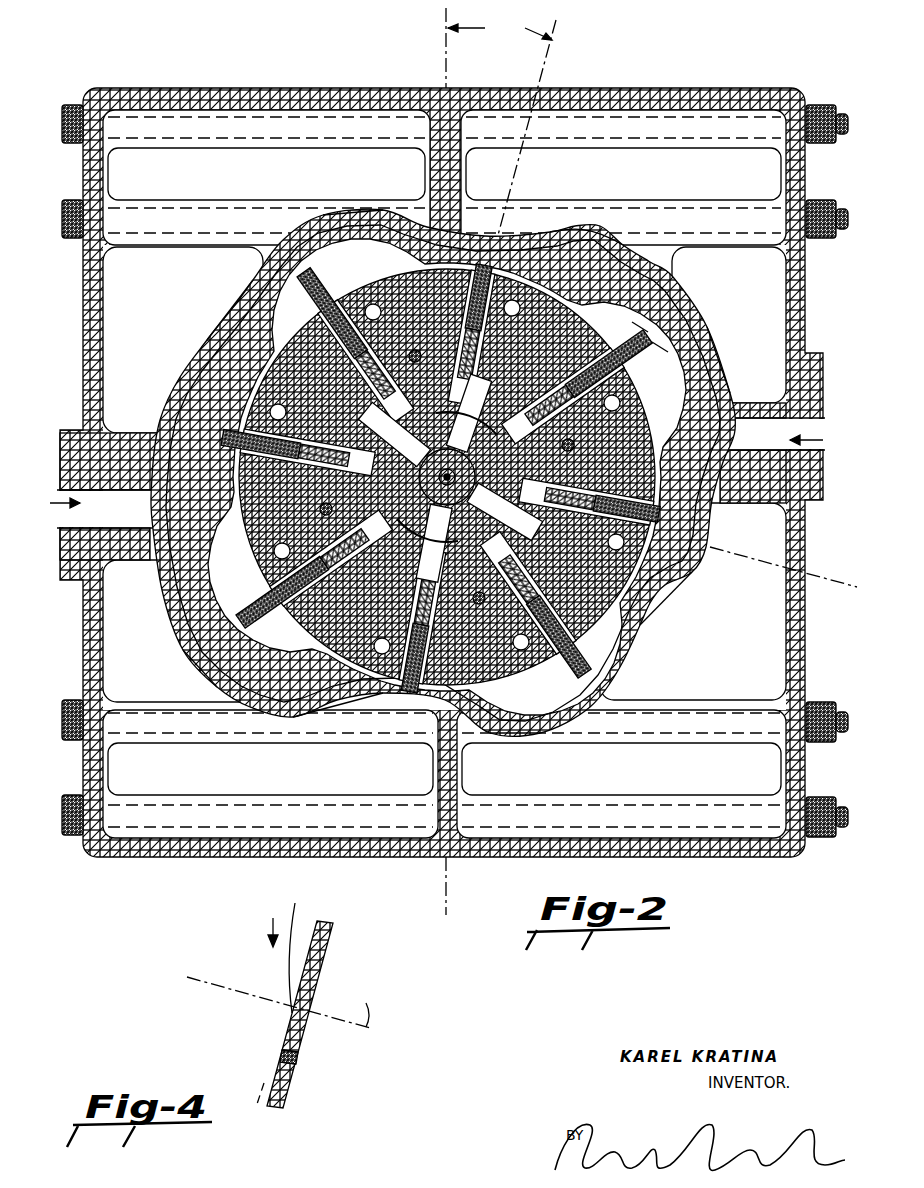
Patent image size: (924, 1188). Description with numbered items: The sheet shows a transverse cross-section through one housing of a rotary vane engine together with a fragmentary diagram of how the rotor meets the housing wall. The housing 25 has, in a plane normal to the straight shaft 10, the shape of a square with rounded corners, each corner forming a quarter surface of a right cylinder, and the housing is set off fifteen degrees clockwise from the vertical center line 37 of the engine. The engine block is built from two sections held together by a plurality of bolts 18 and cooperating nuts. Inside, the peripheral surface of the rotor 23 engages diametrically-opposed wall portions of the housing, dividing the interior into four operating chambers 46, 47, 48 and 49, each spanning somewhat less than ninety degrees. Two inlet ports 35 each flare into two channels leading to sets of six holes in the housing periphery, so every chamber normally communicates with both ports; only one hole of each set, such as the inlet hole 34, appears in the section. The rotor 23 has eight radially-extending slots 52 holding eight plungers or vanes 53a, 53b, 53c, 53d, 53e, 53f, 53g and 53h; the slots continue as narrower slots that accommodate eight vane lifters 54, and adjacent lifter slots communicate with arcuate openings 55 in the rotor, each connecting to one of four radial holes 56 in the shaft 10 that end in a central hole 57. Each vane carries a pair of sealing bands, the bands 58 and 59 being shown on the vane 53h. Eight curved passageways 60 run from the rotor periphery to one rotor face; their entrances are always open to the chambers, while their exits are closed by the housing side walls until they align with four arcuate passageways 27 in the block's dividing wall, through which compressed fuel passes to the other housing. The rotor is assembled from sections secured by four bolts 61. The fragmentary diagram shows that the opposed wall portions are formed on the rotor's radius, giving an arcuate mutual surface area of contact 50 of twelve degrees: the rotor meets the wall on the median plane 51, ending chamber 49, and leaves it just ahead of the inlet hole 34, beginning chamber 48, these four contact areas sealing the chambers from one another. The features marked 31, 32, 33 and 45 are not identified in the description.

In FIG. 2, the straight shaft 10 is at (440, 459).
In FIG. 2, the bolts 18 is at (233, 804).
In FIG. 2, the rotor 23 is at (283, 323).
In FIG. 4, the rotor 23 is at (228, 970).
In FIG. 2, the housing 25 is at (622, 647).
In FIG. 4, the housing 25 is at (323, 961).
In FIG. 2, the arcuate passageways 27 is at (456, 650).
In FIG. 2, the stator shoulder 31 is at (560, 282).
In FIG. 2, the stator shoulder 32 is at (247, 357).
In FIG. 2, the stator shoulder 33 is at (328, 690).
In FIG. 2, the inlet hole 34 is at (633, 583).
In FIG. 4, the inlet hole 34 is at (300, 1058).
In FIG. 2, the inlet ports 35 is at (62, 518).
In FIG. 2, the vertical center line 37 is at (446, 50).
In FIG. 2, the housing 45 is at (655, 423).
In FIG. 2, the operating chamber 46 is at (358, 245).
In FIG. 2, the operating chamber 47 is at (233, 577).
In FIG. 2, the operating chamber 48 is at (513, 695).
In FIG. 4, the operating chamber 48 is at (251, 1104).
In FIG. 2, the operating chamber 49 is at (605, 322).
In FIG. 4, the operating chamber 49 is at (305, 916).
In FIG. 4, the mutual surface area of contact 50 is at (292, 1016).
In FIG. 2, the median plane 51 is at (826, 583).
In FIG. 4, the median plane 51 is at (356, 1007).
In FIG. 2, the radially-extending slots 52 is at (400, 548).
In FIG. 2, the vane 53a is at (484, 266).
In FIG. 2, the vane 53b is at (304, 272).
In FIG. 2, the vane 53c is at (222, 437).
In FIG. 2, the vane 53d is at (241, 622).
In FIG. 2, the vane 53e is at (420, 700).
In FIG. 2, the vane 53f is at (585, 674).
In FIG. 2, the vane 53g is at (659, 514).
In FIG. 2, the vane 53h is at (648, 338).
In FIG. 2, the vane lifters 54 is at (518, 542).
In FIG. 2, the arcuate openings 55 is at (405, 524).
In FIG. 2, the radial holes 56 is at (400, 486).
In FIG. 2, the central hole 57 is at (447, 479).
In FIG. 2, the sealing band 58 is at (660, 347).
In FIG. 2, the sealing band 59 is at (640, 327).
In FIG. 2, the curved passageways 60 is at (522, 651).
In FIG. 2, the bolts 61 is at (319, 509).